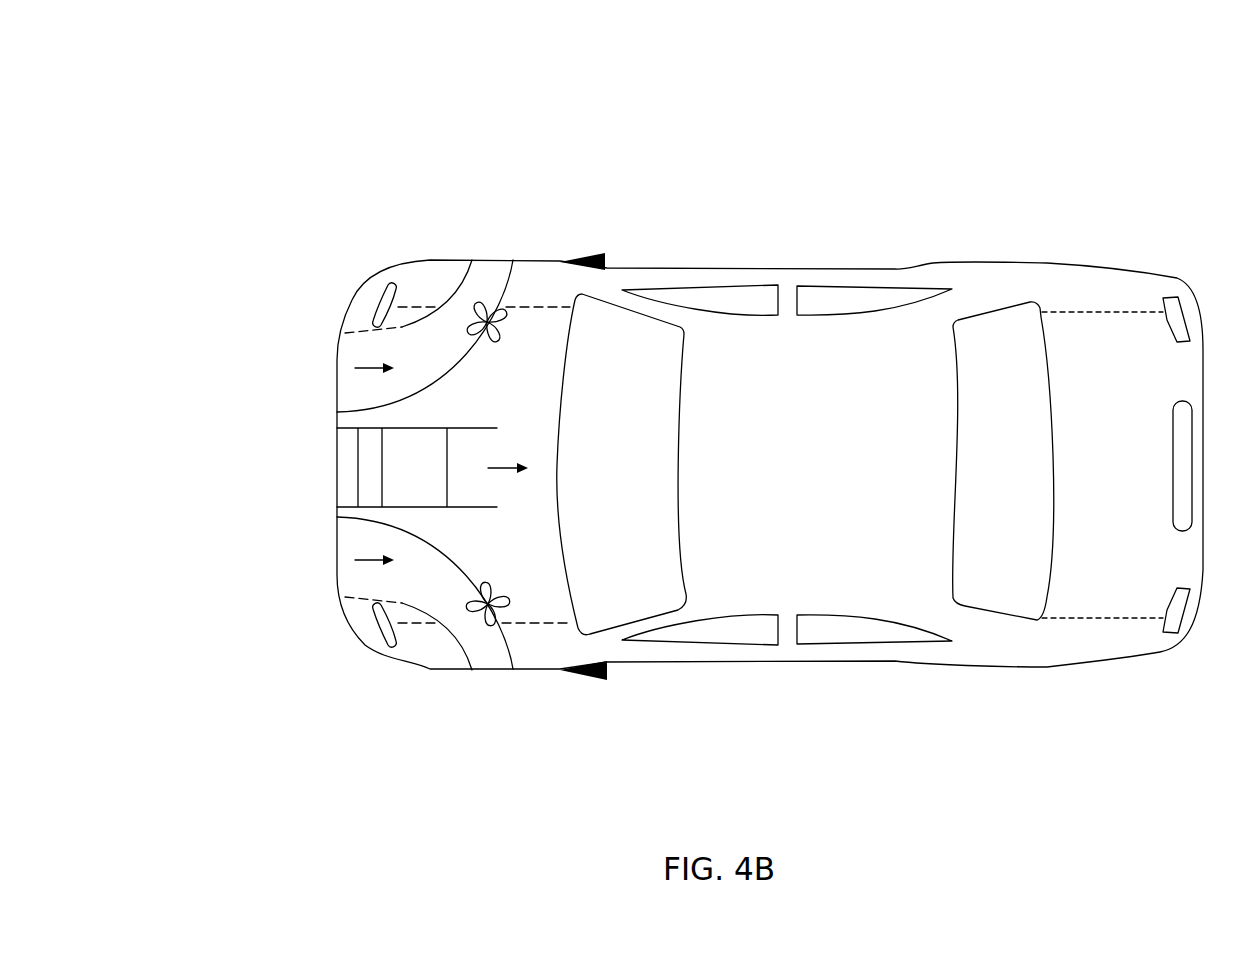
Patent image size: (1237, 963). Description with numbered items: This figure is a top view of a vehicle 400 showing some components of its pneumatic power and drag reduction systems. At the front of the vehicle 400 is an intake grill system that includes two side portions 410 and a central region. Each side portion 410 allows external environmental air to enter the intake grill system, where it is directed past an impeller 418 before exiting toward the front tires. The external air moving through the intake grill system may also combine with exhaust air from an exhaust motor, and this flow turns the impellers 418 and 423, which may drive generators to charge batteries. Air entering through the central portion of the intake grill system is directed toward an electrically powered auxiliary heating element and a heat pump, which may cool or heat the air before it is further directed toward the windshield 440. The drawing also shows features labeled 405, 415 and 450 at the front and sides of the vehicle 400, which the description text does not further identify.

The vehicle 400 is at (163, 124).
The lower air channel 405 is at (360, 545).
The side portion 410 is at (377, 357).
The grille 415 is at (343, 478).
The impeller 418 is at (488, 604).
The impeller 423 is at (487, 322).
The windshield 440 is at (607, 442).
The side air outlet 450 is at (605, 253).